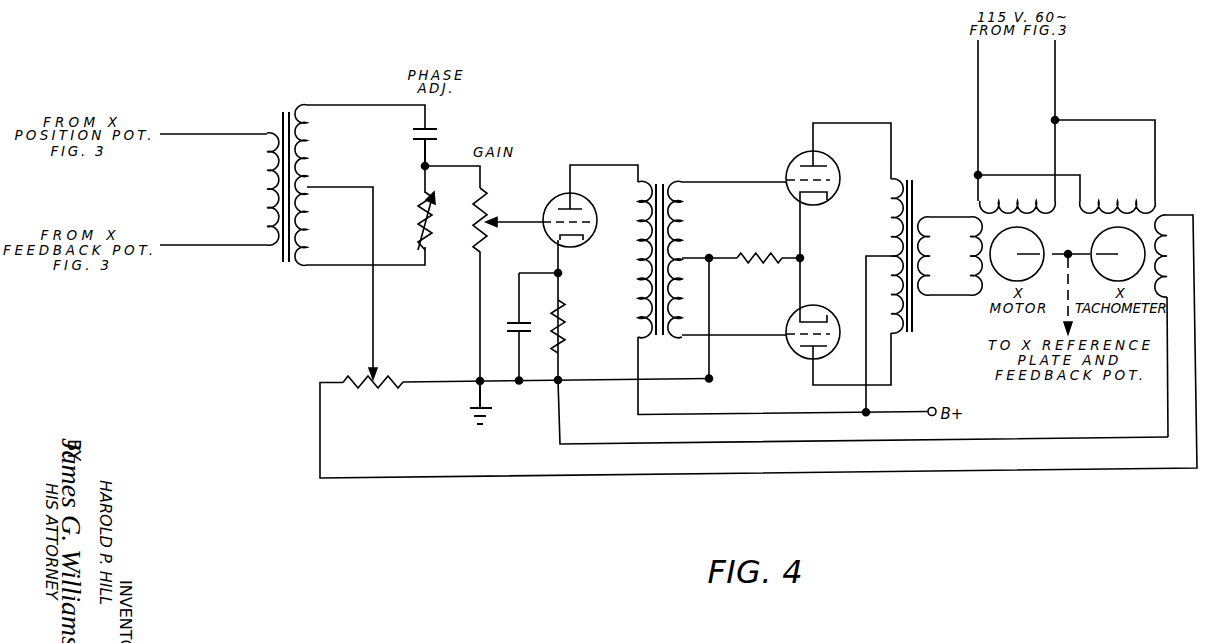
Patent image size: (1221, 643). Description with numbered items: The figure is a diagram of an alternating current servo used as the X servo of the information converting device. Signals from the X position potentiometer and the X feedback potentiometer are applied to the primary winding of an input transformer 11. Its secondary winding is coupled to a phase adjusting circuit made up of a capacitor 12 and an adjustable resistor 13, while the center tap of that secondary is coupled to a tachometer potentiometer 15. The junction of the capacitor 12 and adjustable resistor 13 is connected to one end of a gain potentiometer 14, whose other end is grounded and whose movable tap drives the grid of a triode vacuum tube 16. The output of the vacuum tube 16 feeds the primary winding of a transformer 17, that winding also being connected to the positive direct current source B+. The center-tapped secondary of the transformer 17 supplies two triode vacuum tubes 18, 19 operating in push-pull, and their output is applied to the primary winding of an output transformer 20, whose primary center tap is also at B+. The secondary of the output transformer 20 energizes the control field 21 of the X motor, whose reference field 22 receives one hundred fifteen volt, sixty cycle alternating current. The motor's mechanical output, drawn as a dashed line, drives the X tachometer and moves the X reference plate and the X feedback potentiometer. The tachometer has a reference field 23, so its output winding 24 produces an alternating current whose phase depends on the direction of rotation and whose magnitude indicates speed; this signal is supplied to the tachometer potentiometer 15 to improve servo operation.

The input transformer 11 is at (278, 123).
The capacitor 12 is at (443, 132).
The adjustable resistor 13 is at (417, 217).
The gain potentiometer 14 is at (487, 208).
The tachometer potentiometer 15 is at (371, 385).
The triode vacuum tube 16 is at (592, 209).
The transformer 17 is at (658, 178).
The triode vacuum tube 18 is at (841, 166).
The triode vacuum tube 19 is at (826, 304).
The output transformer 20 is at (915, 183).
The control field 21 is at (968, 257).
The reference field 22 is at (1017, 200).
The reference field 23 is at (1120, 198).
The output winding 24 is at (1173, 254).